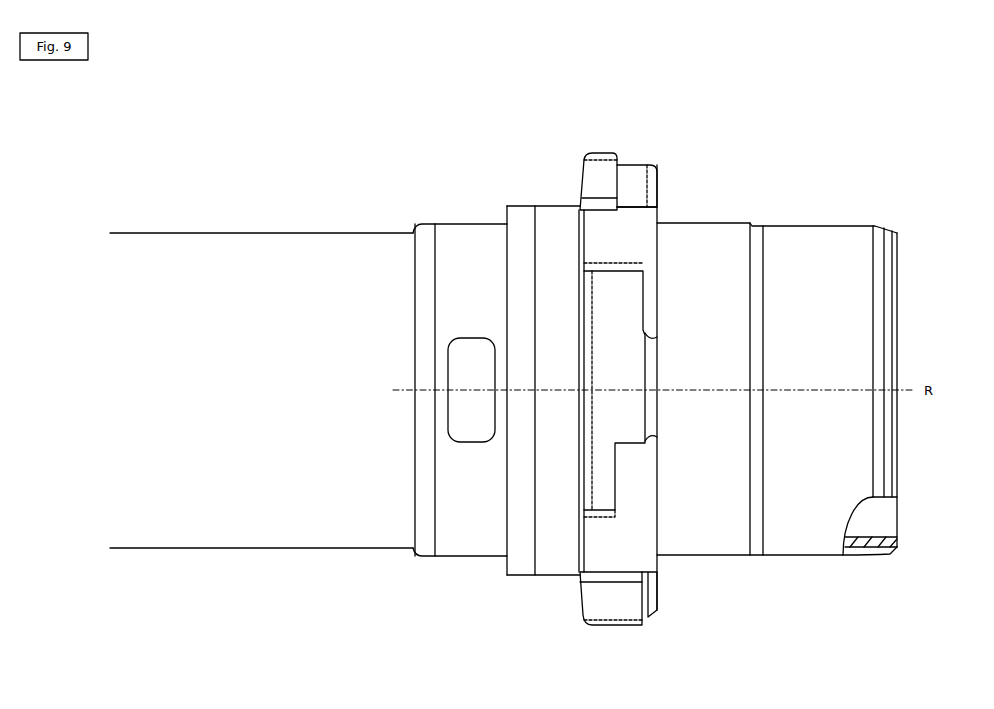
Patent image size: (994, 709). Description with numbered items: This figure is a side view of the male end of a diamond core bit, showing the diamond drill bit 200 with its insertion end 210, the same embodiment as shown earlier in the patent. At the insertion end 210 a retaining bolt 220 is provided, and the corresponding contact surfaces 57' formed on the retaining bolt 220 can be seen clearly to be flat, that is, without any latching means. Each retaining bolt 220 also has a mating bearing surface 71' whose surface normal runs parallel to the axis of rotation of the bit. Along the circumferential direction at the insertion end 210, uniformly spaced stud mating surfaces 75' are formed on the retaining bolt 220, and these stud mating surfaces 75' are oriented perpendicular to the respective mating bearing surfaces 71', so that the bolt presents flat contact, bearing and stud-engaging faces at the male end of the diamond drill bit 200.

The diamond drill bit 200 is at (233, 592).
The insertion end 210 is at (822, 177).
The retaining bolt 220 is at (626, 387).
The contact surface 57' is at (573, 391).
The mating bearing surface 71' is at (682, 369).
The stud mating surface 75' is at (652, 151).